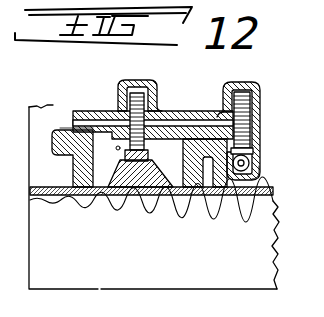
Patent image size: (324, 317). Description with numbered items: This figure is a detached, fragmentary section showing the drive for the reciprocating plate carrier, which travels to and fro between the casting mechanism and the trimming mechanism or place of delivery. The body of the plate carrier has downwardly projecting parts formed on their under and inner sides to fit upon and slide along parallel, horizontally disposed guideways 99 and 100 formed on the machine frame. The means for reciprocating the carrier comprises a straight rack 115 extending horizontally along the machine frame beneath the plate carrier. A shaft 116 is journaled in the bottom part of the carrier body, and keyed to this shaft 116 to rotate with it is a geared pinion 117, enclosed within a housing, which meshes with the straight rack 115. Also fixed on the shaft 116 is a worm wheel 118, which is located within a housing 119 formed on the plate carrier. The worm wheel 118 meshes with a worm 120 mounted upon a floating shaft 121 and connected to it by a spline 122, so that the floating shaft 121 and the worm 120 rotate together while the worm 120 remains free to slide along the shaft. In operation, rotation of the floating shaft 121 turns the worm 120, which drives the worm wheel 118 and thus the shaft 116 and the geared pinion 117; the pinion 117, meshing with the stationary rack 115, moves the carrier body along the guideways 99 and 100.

The guideway 99 is at (68, 157).
The guideway 100 is at (195, 196).
The straight rack 115 is at (137, 162).
The shaft 116 is at (185, 121).
The geared pinion 117 is at (138, 92).
The worm wheel 118 is at (246, 121).
The housing 119 is at (252, 68).
The worm 120 is at (258, 172).
The floating shaft 121 is at (240, 178).
The spline 122 is at (250, 150).